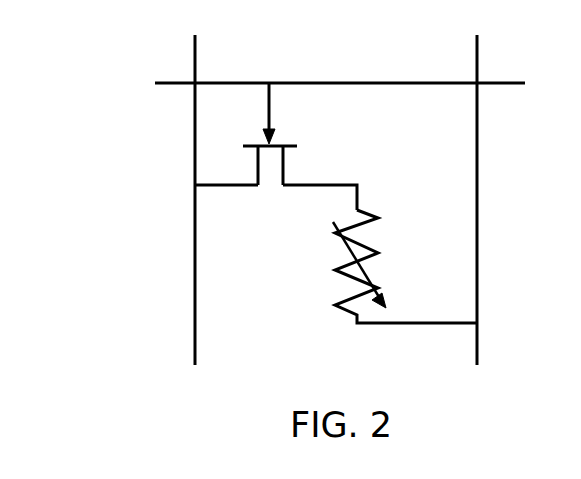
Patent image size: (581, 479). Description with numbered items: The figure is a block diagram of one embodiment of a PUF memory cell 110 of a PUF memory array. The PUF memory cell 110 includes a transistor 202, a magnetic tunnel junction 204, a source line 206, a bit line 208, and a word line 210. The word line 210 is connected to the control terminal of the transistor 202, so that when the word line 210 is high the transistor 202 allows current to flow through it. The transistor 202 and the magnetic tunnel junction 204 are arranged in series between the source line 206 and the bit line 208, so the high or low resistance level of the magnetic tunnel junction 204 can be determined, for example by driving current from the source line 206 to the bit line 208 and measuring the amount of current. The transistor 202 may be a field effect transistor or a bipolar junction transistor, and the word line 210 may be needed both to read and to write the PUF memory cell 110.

The PUF memory cell 110 is at (66, 79).
The transistor 202 is at (288, 143).
The magnetic tunnel junction 204 is at (338, 272).
The source line 206 is at (196, 64).
The bit line 208 is at (478, 64).
The word line 210 is at (169, 82).